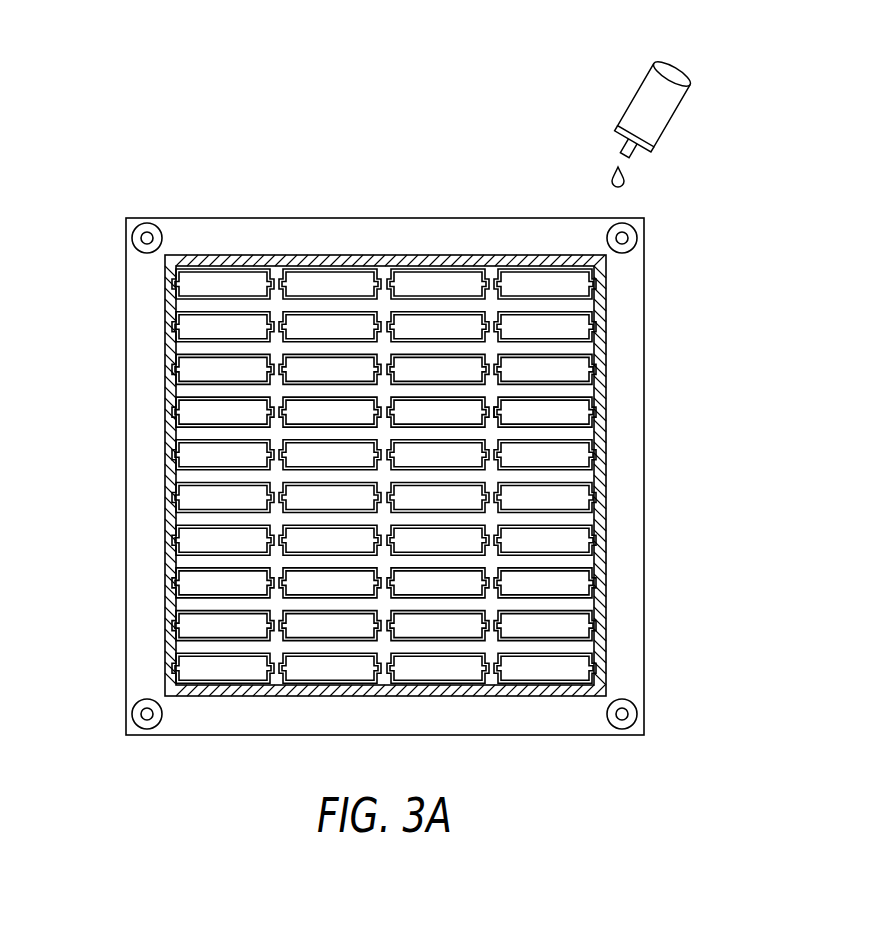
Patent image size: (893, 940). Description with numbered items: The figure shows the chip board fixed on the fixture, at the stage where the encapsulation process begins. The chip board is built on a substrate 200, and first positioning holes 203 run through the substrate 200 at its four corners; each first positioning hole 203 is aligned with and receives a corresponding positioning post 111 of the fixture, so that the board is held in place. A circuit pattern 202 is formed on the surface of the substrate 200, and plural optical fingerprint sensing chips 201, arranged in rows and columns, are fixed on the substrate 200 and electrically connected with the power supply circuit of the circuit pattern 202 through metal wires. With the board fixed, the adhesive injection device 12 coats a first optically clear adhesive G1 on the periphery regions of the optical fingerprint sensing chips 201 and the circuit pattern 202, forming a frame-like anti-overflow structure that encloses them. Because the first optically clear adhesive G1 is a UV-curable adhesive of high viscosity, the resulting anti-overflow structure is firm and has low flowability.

The adhesive injection device 12 is at (643, 97).
The positioning post 111 is at (140, 237).
The first positioning hole 203 is at (147, 223).
The first optically clear adhesive G1 is at (313, 256).
The substrate 200 is at (644, 608).
The optical fingerprint sensing chip 201 is at (580, 413).
The circuit pattern 202 is at (498, 408).